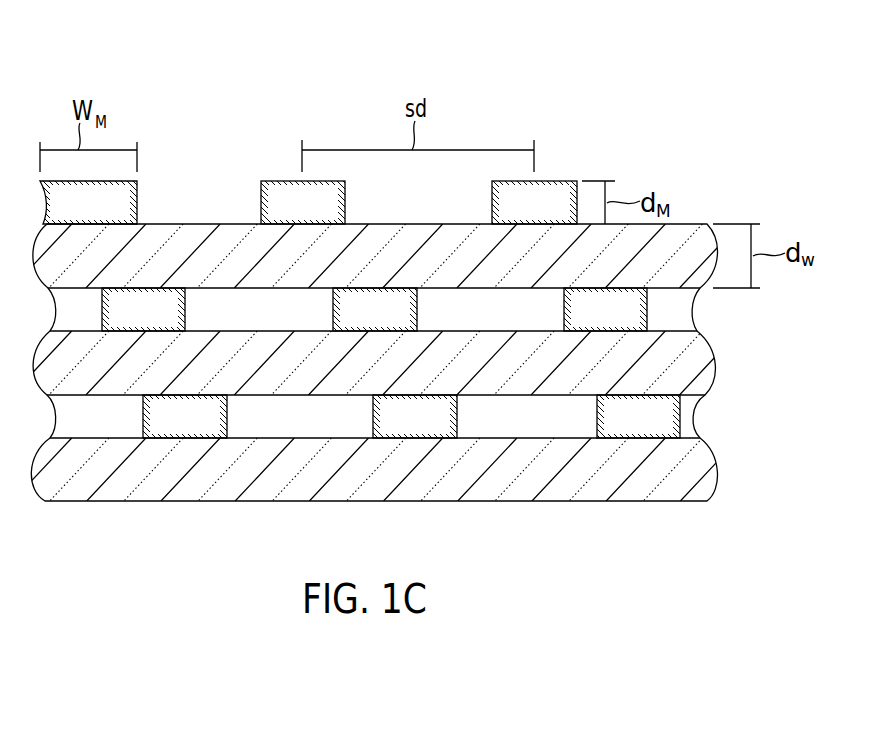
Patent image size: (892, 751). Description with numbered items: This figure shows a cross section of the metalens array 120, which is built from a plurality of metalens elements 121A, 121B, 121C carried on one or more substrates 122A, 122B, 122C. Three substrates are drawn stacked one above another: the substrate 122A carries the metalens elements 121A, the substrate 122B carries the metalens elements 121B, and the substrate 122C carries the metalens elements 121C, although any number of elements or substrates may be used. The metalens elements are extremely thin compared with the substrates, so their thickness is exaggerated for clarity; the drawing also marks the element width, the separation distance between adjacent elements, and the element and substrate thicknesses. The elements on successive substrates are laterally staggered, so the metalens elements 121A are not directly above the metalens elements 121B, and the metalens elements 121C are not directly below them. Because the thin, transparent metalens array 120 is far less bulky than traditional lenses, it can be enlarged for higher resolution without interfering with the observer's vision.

The metalens array 120 is at (376, 102).
The metalens elements 121A is at (113, 216).
The metalens elements 121B is at (168, 323).
The metalens elements 121C is at (210, 430).
The substrate 122A is at (398, 266).
The substrate 122B is at (398, 372).
The substrate 122C is at (398, 485).